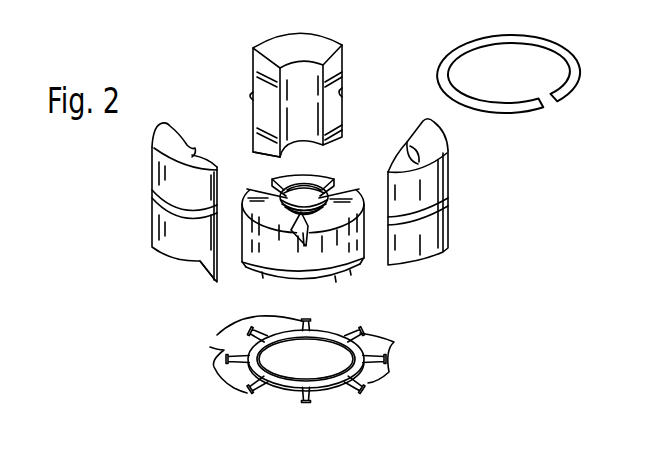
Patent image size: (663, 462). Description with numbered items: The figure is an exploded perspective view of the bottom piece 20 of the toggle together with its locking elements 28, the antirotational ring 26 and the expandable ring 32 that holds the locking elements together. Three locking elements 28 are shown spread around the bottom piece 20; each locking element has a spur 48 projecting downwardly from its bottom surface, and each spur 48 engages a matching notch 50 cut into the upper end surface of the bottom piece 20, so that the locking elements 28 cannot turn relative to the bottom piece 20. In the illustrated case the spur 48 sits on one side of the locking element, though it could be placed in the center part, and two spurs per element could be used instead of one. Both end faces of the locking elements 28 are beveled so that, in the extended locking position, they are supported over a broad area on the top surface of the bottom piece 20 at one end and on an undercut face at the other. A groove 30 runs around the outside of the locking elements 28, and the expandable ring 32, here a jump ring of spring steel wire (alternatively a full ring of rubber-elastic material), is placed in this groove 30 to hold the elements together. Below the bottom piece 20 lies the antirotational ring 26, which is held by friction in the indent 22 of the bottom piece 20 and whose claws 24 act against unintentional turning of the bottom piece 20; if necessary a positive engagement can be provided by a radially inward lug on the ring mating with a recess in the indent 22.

The bottom piece 20 is at (358, 275).
The indent 22 is at (312, 277).
The claws 24 is at (250, 336).
The antirotational ring 26 is at (328, 396).
The locking elements 28 is at (147, 157).
The groove 30 is at (162, 202).
The expandable ring 32 is at (556, 45).
The spur 48 is at (213, 281).
The notch 50 is at (272, 178).